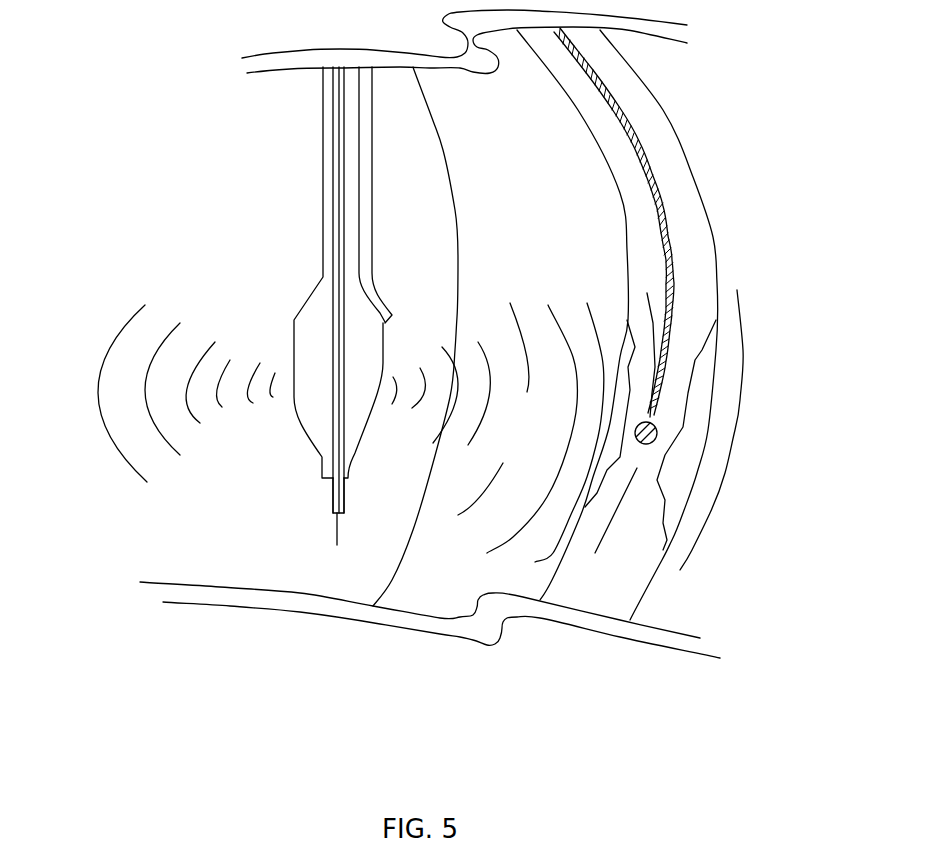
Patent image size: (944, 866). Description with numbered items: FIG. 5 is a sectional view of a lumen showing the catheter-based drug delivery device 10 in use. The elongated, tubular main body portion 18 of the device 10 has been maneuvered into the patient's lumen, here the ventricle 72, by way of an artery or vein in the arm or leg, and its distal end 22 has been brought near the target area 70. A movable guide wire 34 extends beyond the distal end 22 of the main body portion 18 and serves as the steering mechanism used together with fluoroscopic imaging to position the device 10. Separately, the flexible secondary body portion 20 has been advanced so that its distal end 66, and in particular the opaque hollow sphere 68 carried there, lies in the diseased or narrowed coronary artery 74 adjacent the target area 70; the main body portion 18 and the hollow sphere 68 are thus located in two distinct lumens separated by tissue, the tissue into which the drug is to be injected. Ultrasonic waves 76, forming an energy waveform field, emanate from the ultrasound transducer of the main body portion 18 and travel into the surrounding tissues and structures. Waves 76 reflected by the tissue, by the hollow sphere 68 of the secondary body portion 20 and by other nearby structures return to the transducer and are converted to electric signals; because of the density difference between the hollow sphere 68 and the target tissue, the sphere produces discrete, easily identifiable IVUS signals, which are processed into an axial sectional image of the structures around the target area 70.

The catheter-based drug delivery device 10 is at (150, 218).
The main body portion 18 is at (258, 307).
The secondary body portion 20 is at (653, 180).
The distal end 22 is at (298, 483).
The guide wire 34 is at (333, 528).
The distal end 66 is at (676, 397).
The hollow sphere 68 is at (658, 433).
The target area 70 is at (503, 441).
The ventricle 72 is at (219, 446).
The coronary artery 74 is at (608, 563).
The ultrasonic waves 76 is at (106, 361).